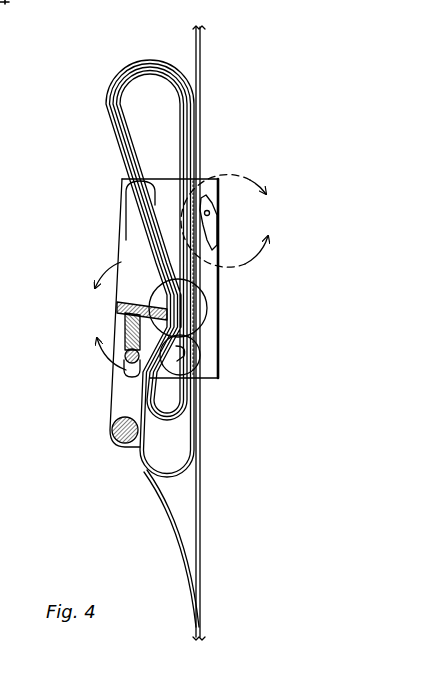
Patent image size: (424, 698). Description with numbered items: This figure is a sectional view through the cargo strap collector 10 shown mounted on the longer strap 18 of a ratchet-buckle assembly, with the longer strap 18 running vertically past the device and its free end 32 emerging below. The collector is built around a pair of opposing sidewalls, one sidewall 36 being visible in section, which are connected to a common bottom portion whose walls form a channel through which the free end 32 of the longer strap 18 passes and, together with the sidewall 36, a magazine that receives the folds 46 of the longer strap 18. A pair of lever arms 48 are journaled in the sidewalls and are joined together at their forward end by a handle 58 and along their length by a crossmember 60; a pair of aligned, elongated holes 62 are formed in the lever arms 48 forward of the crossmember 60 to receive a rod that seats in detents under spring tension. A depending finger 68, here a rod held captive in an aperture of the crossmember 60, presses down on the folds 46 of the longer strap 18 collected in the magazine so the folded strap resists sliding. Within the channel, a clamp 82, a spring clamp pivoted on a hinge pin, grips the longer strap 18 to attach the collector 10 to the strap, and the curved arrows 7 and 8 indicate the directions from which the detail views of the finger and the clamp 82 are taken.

The cargo strap collector 10 is at (86, 412).
The longer strap 18 is at (198, 57).
The free end 32 is at (160, 507).
The sidewall 36 is at (170, 190).
The folds 46 is at (112, 134).
The lever arms 48 is at (122, 227).
The handle 58 is at (120, 441).
The crossmember 60 is at (118, 302).
The elongated holes 62 is at (112, 393).
The depending finger 68 is at (190, 290).
The rotation direction 7 is at (106, 316).
The rotation direction 8 is at (233, 221).
The clamp 82 is at (216, 220).